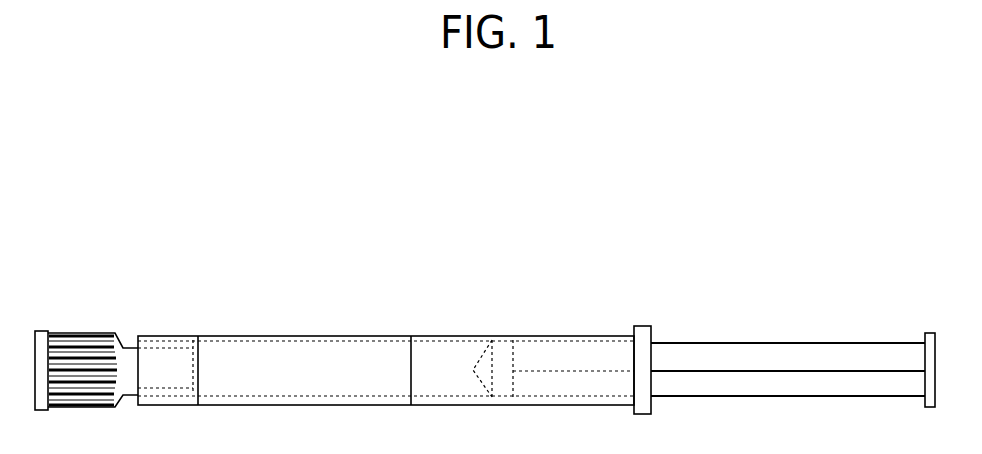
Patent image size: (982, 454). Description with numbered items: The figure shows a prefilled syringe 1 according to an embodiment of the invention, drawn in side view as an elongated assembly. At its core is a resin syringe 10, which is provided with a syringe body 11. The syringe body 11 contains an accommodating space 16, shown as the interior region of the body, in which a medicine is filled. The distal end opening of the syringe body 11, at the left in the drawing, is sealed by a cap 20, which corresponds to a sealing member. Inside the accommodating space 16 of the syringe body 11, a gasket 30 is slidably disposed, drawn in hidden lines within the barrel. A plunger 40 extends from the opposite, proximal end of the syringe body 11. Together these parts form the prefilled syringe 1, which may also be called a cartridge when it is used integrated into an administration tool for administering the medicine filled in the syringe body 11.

The prefilled syringe 1 is at (730, 247).
The resin syringe 10 is at (349, 335).
The syringe body 11 is at (316, 333).
The accommodating space 16 is at (397, 366).
The cap 20 is at (103, 333).
The gasket 30 is at (491, 337).
The plunger 40 is at (700, 340).